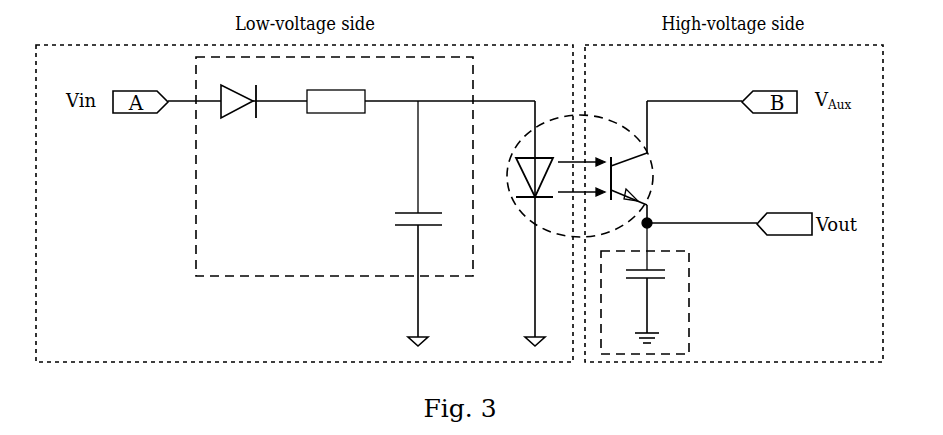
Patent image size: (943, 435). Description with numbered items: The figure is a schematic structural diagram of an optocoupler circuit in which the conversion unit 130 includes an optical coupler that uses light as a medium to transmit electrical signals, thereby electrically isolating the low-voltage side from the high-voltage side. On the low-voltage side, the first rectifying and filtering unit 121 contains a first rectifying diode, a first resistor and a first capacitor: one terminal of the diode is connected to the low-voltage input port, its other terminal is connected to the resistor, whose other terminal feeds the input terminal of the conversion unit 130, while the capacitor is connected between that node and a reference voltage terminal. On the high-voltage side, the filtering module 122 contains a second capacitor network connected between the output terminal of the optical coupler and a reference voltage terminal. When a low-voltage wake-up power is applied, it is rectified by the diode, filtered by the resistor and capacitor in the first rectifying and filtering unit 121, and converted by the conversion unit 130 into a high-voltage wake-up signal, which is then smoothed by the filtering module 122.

The first rectifying and filtering unit 121 is at (334, 201).
The filtering module 122 is at (689, 291).
The conversion unit 130 is at (602, 148).